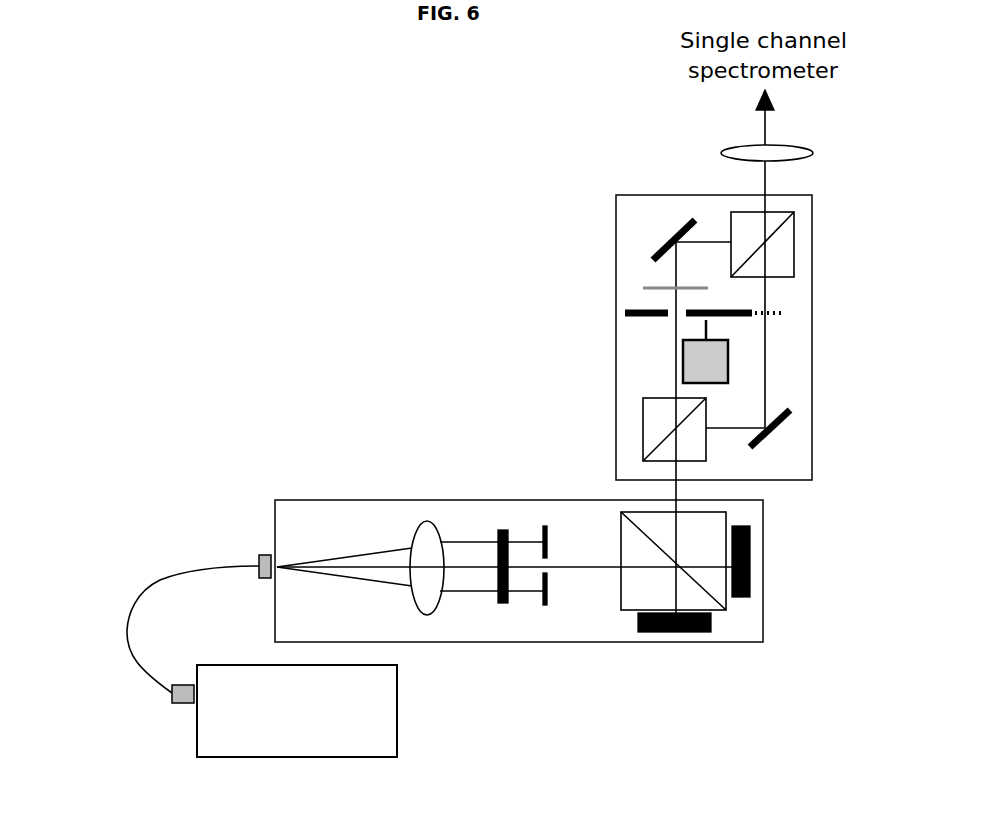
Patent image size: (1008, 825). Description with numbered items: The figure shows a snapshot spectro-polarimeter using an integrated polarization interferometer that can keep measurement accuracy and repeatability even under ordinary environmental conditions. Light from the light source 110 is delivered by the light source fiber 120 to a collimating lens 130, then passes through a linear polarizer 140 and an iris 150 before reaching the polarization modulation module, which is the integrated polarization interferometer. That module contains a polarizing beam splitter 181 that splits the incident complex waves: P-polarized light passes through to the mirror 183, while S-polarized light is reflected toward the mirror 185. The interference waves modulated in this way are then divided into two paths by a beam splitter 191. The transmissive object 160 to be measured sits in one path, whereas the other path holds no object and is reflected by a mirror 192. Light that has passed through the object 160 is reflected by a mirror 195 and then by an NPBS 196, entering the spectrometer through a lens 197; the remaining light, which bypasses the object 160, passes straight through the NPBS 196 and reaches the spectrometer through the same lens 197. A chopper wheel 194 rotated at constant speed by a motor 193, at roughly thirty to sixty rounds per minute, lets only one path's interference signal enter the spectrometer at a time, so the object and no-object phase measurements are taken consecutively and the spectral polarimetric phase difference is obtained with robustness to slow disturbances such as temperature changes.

The light source 110 is at (397, 737).
The light source fiber 120 is at (133, 598).
The collimating lens 130 is at (427, 615).
The linear polarizer 140 is at (503, 530).
The iris 150 is at (545, 605).
The transmissive object 160 is at (643, 288).
The polarizing beam splitter 181 is at (621, 512).
The mirror 183 is at (750, 585).
The mirror 185 is at (682, 633).
The beam splitter (NPBS) 191 is at (643, 413).
The mirror 192 is at (785, 420).
The motor 193 is at (683, 372).
The chopper wheel 194 is at (625, 313).
The mirror 195 is at (660, 254).
The NPBS 196 is at (794, 250).
The lens 197 is at (722, 153).